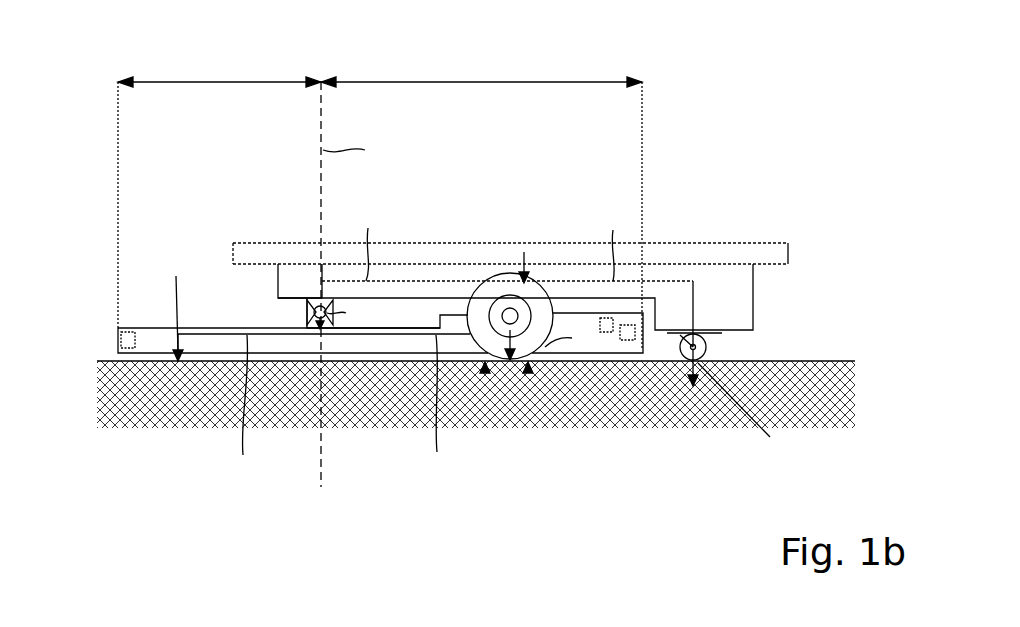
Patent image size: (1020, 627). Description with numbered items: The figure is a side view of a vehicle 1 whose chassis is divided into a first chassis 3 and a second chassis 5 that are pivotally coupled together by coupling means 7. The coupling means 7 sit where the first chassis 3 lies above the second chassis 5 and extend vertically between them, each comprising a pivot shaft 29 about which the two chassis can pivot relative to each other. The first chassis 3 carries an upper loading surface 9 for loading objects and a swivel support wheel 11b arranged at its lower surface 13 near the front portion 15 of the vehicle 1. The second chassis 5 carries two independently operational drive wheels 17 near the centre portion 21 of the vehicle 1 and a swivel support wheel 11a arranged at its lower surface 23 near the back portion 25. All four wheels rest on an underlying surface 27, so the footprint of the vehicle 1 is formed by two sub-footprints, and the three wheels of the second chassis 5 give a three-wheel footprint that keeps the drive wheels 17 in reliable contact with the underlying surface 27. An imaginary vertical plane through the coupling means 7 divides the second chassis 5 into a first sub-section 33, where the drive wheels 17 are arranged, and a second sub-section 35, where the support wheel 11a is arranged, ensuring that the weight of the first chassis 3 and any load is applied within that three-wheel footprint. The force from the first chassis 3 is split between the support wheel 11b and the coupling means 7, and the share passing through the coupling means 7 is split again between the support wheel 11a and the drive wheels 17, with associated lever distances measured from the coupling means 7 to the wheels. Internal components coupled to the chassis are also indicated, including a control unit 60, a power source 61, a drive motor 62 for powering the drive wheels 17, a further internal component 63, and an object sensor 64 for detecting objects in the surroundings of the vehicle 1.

The vehicle 1 is at (228, 196).
The first chassis 3 is at (737, 295).
The second chassis 5 is at (145, 340).
The coupling means 7 is at (305, 312).
The upper loading surface 9 is at (663, 243).
The support wheel 11a is at (175, 361).
The support wheel 11b is at (686, 356).
The lower surface 13 is at (731, 340).
The front portion 15 is at (797, 272).
The drive wheels 17 is at (493, 283).
The centre portion 21 is at (551, 206).
The lower surface 23 is at (203, 355).
The back portion 25 is at (87, 320).
The underlying surface 27 is at (841, 360).
The pivot shaft 29 is at (319, 305).
The first sub-section 33 is at (480, 82).
The second sub-section 35 is at (207, 82).
The control unit 60 is at (605, 334).
The power source 61 is at (627, 342).
The drive motor 62 is at (528, 372).
The wheel contact point 63 is at (485, 372).
The object sensor 64 is at (128, 338).